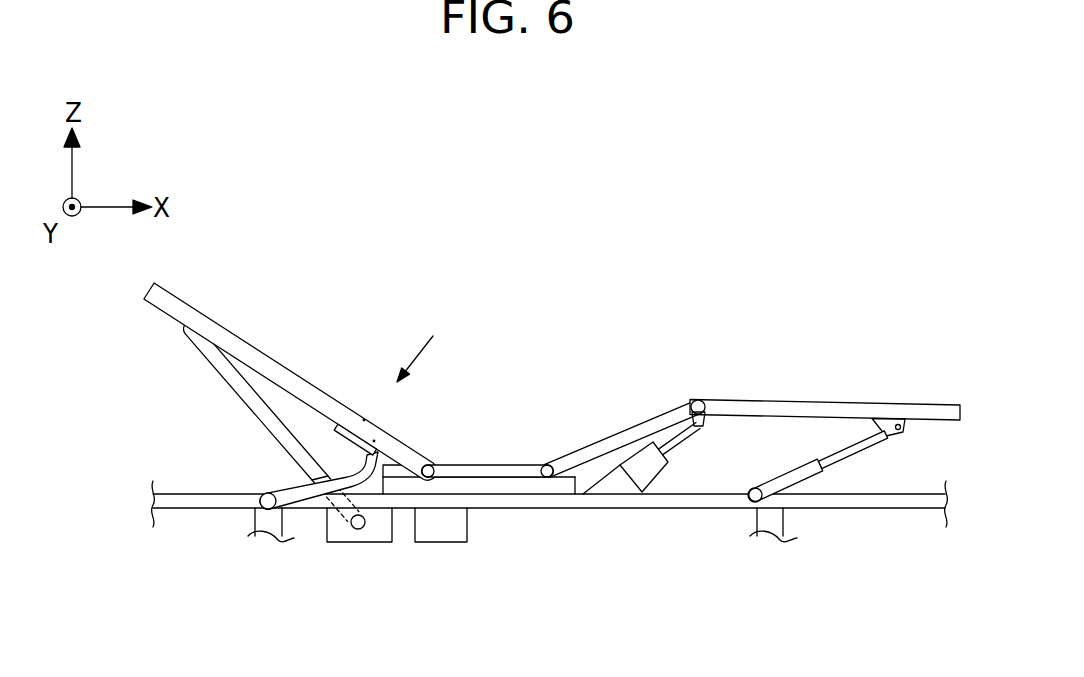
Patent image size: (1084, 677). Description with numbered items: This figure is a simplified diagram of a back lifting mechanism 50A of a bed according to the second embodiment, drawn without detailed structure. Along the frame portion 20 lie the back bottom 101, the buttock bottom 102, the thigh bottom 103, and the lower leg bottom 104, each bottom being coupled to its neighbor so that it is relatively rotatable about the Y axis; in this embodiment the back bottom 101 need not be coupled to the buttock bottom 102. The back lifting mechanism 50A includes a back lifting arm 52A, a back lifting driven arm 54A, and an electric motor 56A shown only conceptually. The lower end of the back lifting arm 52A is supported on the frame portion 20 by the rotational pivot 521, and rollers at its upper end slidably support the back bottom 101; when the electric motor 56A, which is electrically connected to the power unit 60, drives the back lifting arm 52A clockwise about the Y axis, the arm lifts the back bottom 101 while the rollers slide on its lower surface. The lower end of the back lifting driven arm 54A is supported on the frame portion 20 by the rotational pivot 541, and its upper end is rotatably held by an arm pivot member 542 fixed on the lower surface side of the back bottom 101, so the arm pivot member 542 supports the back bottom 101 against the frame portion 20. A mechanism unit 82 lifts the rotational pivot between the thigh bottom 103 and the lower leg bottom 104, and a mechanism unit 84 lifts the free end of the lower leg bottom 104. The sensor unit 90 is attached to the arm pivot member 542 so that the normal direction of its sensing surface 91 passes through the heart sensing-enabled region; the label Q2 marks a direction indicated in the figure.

The frame portion 20 is at (847, 503).
The back lifting mechanism 50A is at (221, 448).
The back lifting arm 52A is at (242, 397).
The back lifting driven arm 54A is at (282, 490).
The rotational pivot 541 is at (262, 506).
The arm pivot member 542 is at (383, 430).
The rotational pivot 521 is at (360, 532).
The electric motor 56A is at (333, 543).
The power unit 60 is at (452, 535).
The mechanism unit 82 is at (691, 451).
The mechanism unit 84 is at (820, 442).
The sensor unit 90 is at (361, 408).
The sensing surface 91 is at (374, 441).
The back bottom 101 is at (218, 321).
The buttock bottom 102 is at (492, 464).
The thigh bottom 103 is at (663, 416).
The lower leg bottom 104 is at (828, 406).
The rotation direction Q2 is at (427, 344).